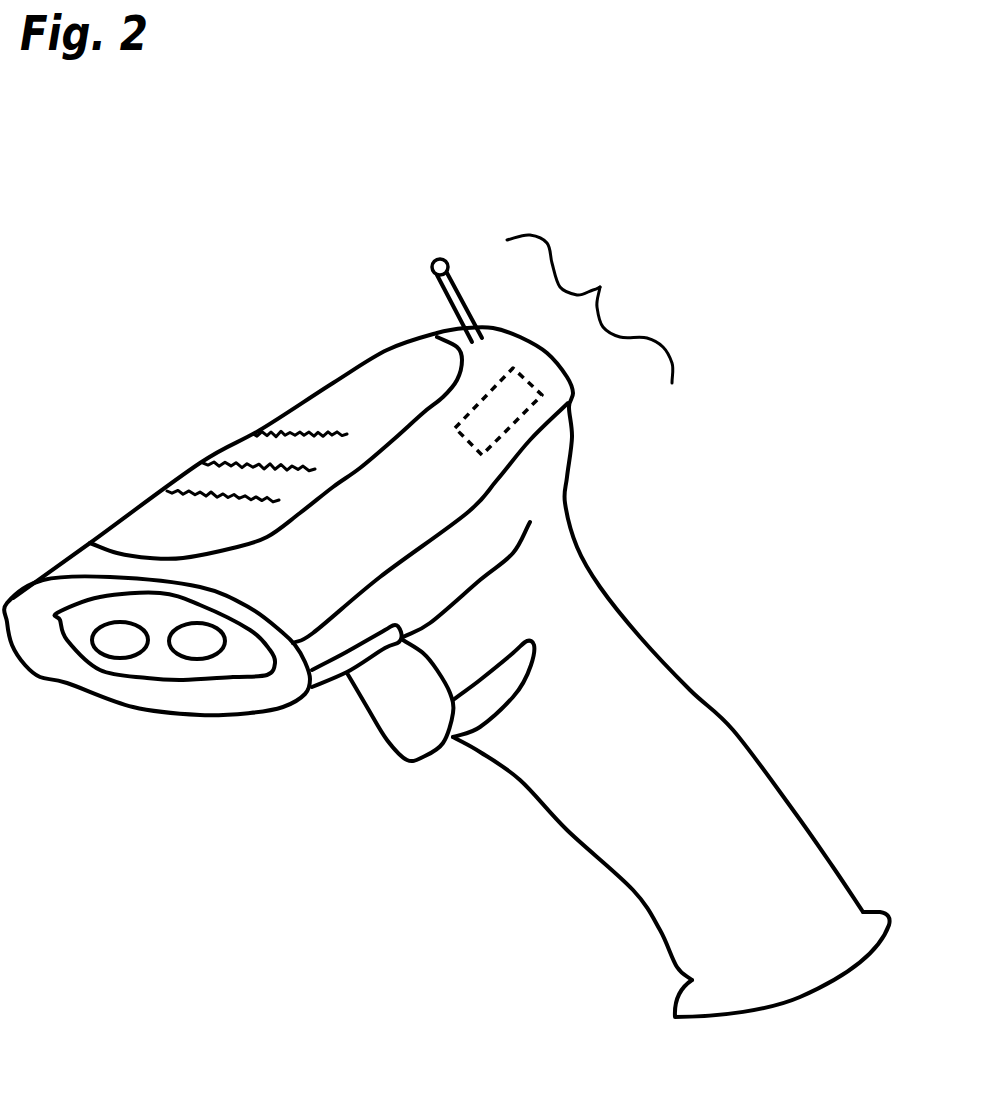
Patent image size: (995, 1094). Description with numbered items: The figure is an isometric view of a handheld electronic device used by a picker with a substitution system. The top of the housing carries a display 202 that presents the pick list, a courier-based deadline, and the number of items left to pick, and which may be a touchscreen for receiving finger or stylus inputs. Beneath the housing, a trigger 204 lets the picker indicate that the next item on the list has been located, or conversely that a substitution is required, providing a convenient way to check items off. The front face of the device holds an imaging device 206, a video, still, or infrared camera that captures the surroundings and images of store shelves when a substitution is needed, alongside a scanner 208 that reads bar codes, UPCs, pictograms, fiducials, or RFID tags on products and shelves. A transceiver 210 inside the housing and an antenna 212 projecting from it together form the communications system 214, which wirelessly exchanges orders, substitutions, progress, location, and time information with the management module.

The display 202 is at (345, 373).
The trigger 204 is at (377, 735).
The imaging device 206 is at (110, 655).
The scanner 208 is at (193, 655).
The transceiver 210 is at (517, 420).
The antenna 212 is at (438, 257).
The communications system 214 is at (590, 309).